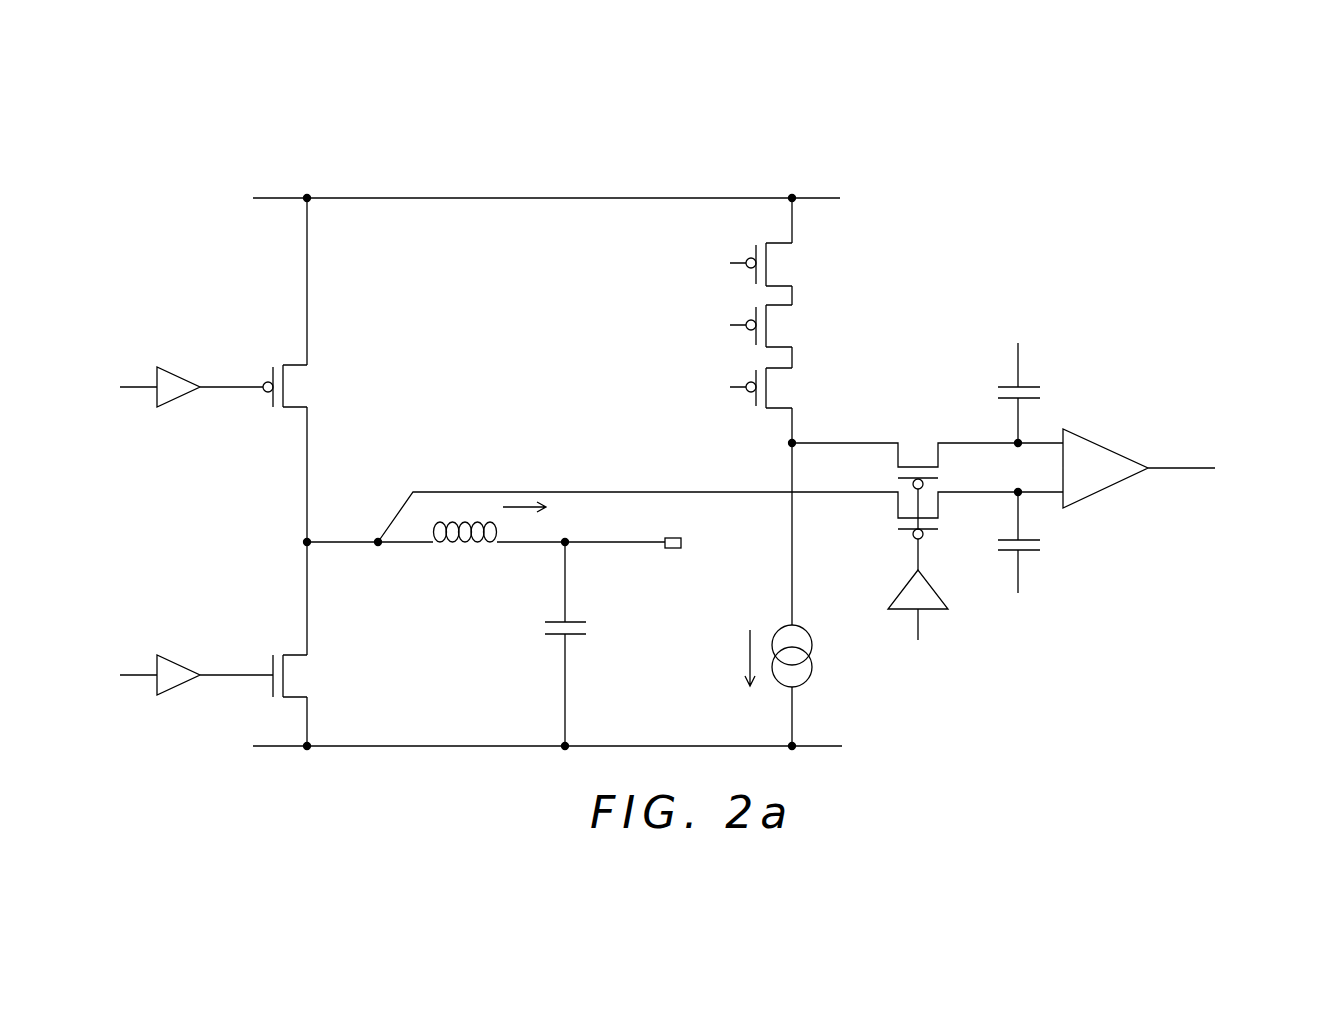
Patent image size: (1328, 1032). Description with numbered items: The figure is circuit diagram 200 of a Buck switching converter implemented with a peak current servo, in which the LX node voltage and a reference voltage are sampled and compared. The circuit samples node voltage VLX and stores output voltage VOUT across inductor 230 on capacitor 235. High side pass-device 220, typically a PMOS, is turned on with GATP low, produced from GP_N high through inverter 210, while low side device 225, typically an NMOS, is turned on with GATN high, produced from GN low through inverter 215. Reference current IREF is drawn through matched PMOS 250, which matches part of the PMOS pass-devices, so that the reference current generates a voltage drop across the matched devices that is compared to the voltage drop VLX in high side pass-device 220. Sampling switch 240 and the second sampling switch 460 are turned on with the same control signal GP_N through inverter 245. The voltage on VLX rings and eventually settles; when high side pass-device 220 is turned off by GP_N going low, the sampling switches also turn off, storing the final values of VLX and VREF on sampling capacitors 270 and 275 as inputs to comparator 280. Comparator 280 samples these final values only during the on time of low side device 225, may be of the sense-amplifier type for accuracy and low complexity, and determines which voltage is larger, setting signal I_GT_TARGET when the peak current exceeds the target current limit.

The circuit diagram 200 is at (387, 148).
The inverter 210 is at (170, 357).
The inverter 215 is at (170, 645).
The high side pass-device 220 is at (318, 369).
The low side device 225 is at (318, 659).
The inductor 230 is at (473, 555).
The capacitor 235 is at (583, 638).
The sampling switch 240 is at (882, 524).
The inverter 245 is at (895, 590).
The matched PMOS 250 is at (690, 325).
The sampling capacitor 270 is at (990, 390).
The sampling capacitor 275 is at (1045, 545).
The comparator 280 is at (1113, 446).
The sampling PMOS switch 460 is at (918, 453).